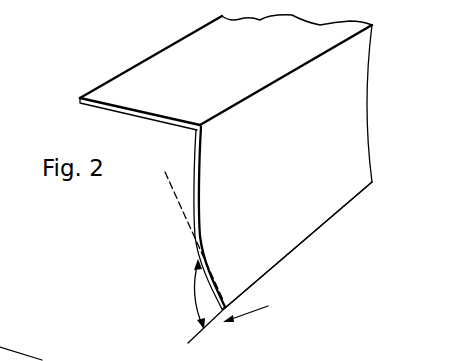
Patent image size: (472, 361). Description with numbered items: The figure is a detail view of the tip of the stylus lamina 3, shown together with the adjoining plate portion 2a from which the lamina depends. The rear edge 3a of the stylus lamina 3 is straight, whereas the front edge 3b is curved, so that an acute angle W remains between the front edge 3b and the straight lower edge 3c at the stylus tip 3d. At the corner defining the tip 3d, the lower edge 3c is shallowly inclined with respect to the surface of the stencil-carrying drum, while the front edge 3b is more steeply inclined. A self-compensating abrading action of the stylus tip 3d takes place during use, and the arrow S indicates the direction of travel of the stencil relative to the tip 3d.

The top plate / flange 2a is at (143, 77).
The stylus lamina 3 is at (312, 192).
The rear edge 3a is at (358, 125).
The front edge 3b is at (195, 192).
The lower edge 3c is at (296, 248).
The stylus tip 3d is at (226, 305).
The acute angle W is at (186, 294).
The direction of travel arrow S is at (245, 325).